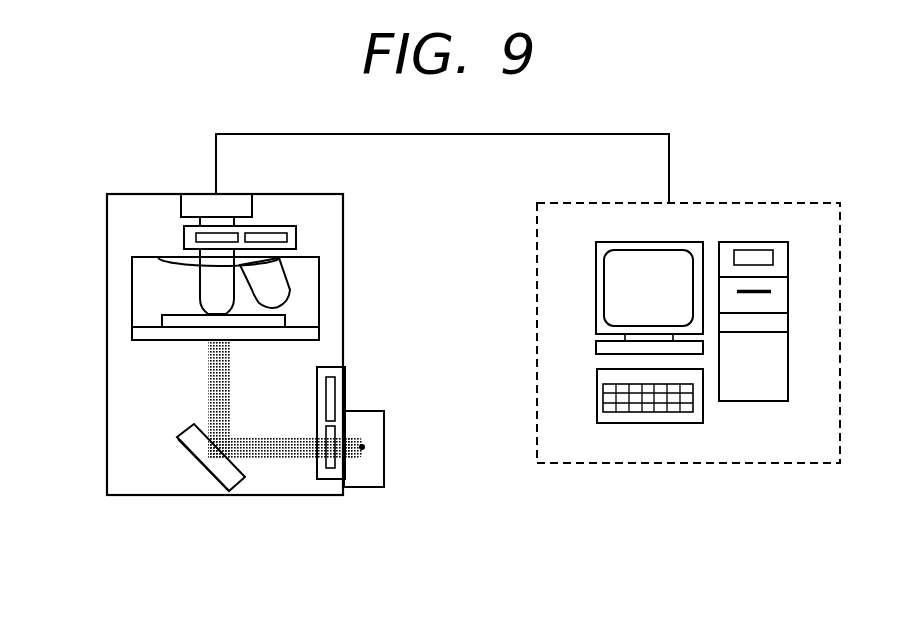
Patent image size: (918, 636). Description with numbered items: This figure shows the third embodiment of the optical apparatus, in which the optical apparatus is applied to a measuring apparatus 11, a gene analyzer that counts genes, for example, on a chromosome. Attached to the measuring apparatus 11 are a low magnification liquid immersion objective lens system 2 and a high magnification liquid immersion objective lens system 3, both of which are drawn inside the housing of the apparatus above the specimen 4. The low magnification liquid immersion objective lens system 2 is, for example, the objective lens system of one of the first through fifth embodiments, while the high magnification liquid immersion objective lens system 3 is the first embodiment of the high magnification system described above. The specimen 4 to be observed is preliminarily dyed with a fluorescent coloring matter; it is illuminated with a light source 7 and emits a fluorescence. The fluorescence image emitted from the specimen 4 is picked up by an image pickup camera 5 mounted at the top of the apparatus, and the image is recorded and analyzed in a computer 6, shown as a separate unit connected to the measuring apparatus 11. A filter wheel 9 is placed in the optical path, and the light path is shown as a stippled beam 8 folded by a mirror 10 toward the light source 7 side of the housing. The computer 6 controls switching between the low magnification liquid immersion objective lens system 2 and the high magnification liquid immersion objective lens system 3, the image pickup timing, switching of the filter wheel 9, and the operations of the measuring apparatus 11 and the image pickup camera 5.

The low magnification liquid immersion objective lens system 2 is at (210, 288).
The high magnification liquid immersion objective lens system 3 is at (268, 271).
The specimen 4 is at (219, 322).
The image pickup camera 5 is at (217, 209).
The computer 6 is at (738, 202).
The light source 7 is at (373, 477).
The light beam 8 is at (256, 452).
The filter wheel 9 is at (297, 230).
The mirror 10 is at (212, 470).
The measuring apparatus 11 is at (121, 482).